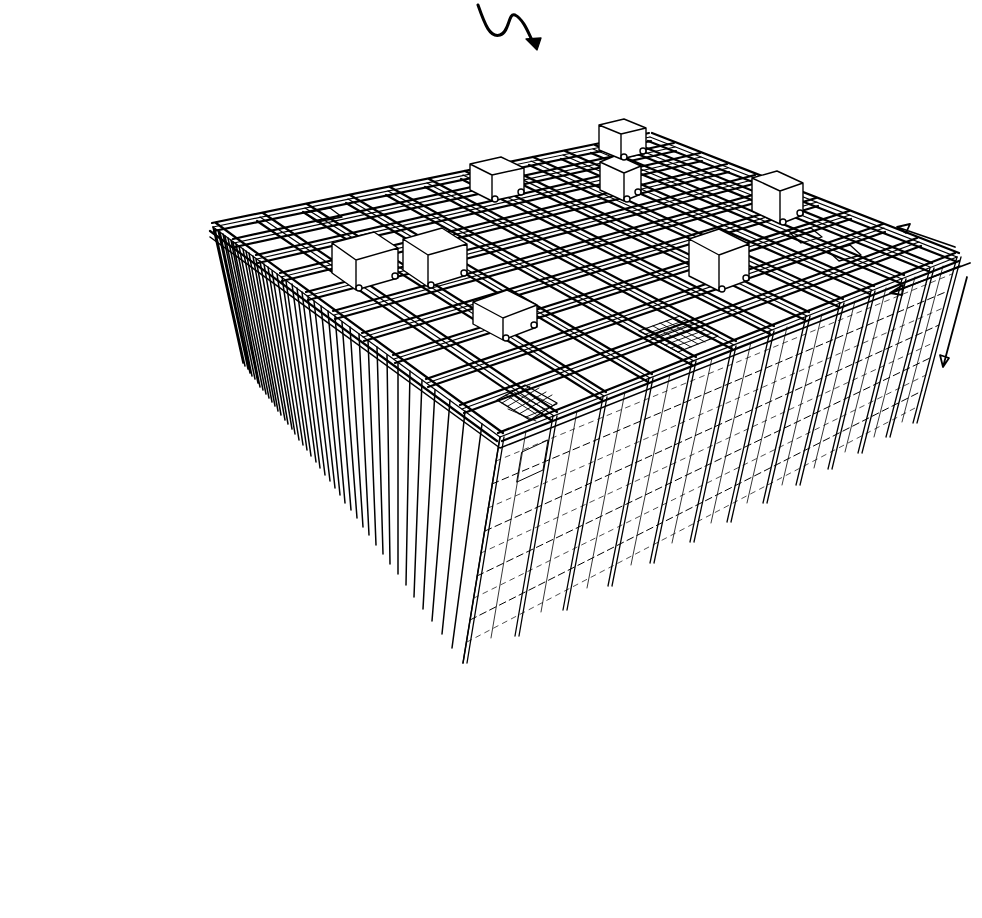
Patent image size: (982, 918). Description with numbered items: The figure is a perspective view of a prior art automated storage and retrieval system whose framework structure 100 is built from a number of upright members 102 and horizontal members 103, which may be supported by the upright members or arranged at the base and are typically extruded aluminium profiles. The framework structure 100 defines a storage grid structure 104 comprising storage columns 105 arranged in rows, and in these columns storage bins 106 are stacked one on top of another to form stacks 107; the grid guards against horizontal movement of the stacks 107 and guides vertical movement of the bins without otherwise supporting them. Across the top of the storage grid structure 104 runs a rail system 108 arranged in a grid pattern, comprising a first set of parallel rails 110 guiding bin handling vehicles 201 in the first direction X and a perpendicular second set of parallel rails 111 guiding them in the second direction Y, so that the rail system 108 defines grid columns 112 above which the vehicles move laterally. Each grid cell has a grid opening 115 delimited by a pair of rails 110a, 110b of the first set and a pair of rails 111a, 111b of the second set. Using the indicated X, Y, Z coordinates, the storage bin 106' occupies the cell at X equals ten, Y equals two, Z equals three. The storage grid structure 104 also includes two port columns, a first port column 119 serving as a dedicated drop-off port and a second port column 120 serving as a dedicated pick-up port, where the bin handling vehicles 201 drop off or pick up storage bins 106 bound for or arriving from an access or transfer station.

The framework structure 100 is at (228, 372).
The upright members 102 is at (450, 557).
The horizontal members 103 is at (772, 423).
The storage grid structure 104 is at (212, 242).
The storage columns 105 is at (373, 467).
The storage bins 106 is at (716, 507).
The storage bin 106' is at (589, 553).
The stacks 107 is at (840, 453).
The rail system 108 is at (887, 228).
The first set of parallel rails 110 is at (367, 330).
The rail of the first set 110a is at (334, 210).
The rail of the first set 110b is at (352, 205).
The second set of parallel rails 111 is at (280, 228).
The rail of the second set 111a is at (300, 210).
The rail of the second set 111b is at (360, 205).
The grid columns 112 is at (838, 247).
The grid opening 115 is at (304, 208).
The first port column 119 is at (527, 417).
The second port column 120 is at (690, 343).
The bin handling vehicle 201 is at (633, 122).